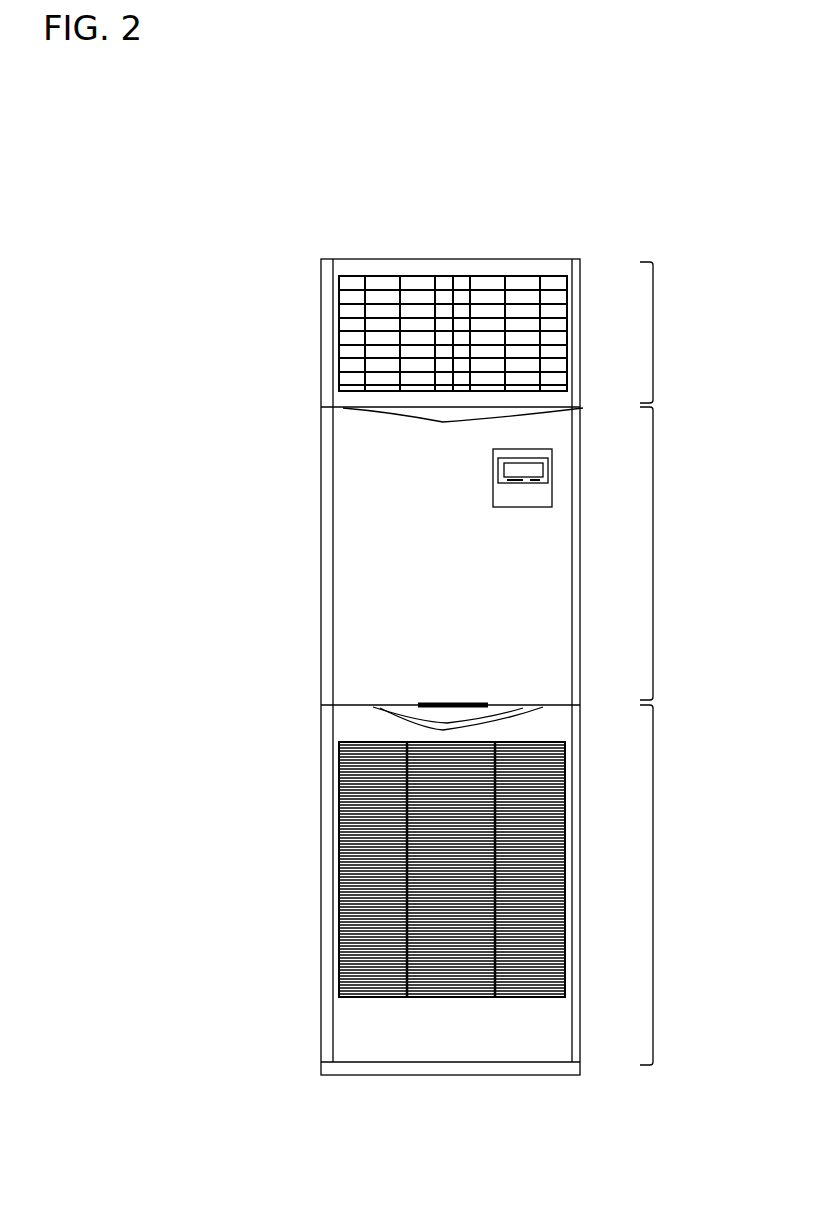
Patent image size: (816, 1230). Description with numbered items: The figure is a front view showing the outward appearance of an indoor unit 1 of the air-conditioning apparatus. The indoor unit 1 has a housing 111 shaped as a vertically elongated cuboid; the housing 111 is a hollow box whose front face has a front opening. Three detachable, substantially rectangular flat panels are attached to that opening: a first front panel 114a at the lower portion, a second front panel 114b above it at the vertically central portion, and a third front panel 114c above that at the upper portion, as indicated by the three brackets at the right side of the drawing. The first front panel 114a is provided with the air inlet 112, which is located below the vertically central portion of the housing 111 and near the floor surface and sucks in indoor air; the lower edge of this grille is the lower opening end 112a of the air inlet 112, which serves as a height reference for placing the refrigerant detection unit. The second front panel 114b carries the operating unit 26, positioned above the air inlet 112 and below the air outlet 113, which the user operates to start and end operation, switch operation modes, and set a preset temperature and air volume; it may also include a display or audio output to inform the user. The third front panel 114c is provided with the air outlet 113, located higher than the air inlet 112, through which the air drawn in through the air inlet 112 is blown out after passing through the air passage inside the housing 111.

The indoor unit 1 is at (313, 214).
The housing 111 is at (321, 596).
The air inlet 112 is at (360, 886).
The lower opening end 112a is at (345, 967).
The air outlet 113 is at (388, 345).
The operating unit 26 is at (505, 493).
The first front panel 114a is at (653, 885).
The second front panel 114b is at (653, 553).
The third front panel 114c is at (653, 335).